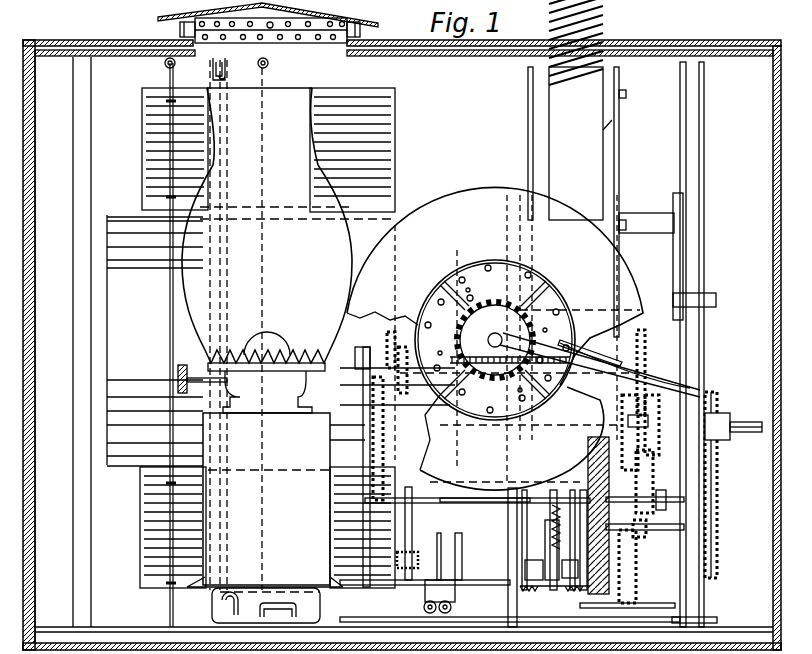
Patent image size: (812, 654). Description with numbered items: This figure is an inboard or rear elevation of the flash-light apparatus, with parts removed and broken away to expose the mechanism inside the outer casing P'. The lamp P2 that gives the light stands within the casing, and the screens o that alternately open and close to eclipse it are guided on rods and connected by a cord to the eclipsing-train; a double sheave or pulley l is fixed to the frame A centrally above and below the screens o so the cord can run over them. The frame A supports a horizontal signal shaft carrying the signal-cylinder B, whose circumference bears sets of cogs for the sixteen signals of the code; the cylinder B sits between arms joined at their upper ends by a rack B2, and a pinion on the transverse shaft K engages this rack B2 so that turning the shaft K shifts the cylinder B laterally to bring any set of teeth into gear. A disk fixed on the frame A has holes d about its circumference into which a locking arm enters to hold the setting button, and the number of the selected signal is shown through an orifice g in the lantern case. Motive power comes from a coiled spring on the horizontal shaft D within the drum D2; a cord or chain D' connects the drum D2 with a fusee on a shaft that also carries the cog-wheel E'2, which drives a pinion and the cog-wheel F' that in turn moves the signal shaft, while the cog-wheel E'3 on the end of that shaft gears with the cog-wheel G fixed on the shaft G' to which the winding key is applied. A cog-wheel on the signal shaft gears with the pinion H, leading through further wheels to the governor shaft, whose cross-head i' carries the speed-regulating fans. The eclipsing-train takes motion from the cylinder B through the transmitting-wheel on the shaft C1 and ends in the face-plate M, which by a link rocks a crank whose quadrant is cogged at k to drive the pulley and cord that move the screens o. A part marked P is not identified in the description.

The outer casing P' is at (402, 345).
The casing partition P is at (119, 350).
The lamp P2 is at (288, 341).
The double sheave or pulley l is at (226, 68).
The cogged edge of crank quadrant k is at (188, 345).
The screen o is at (255, 338).
The cross-head i' is at (150, 341).
The frame A is at (690, 366).
The horizontal shaft D is at (622, 160).
The cord or chain D' is at (623, 119).
The drum D2 is at (612, 164).
The signal-cylinder B is at (494, 338).
The rack B2 is at (575, 349).
The transverse shaft K is at (517, 339).
The holes d is at (478, 338).
The shaft C1 is at (397, 412).
The cog-wheel F' is at (646, 378).
The pinion H is at (645, 464).
The cog-wheel E'2 is at (623, 520).
The cog-wheel E'3 is at (726, 485).
The cog-wheel G is at (723, 407).
The shaft G' is at (746, 416).
The orifice g is at (627, 369).
The face-plate M is at (476, 507).